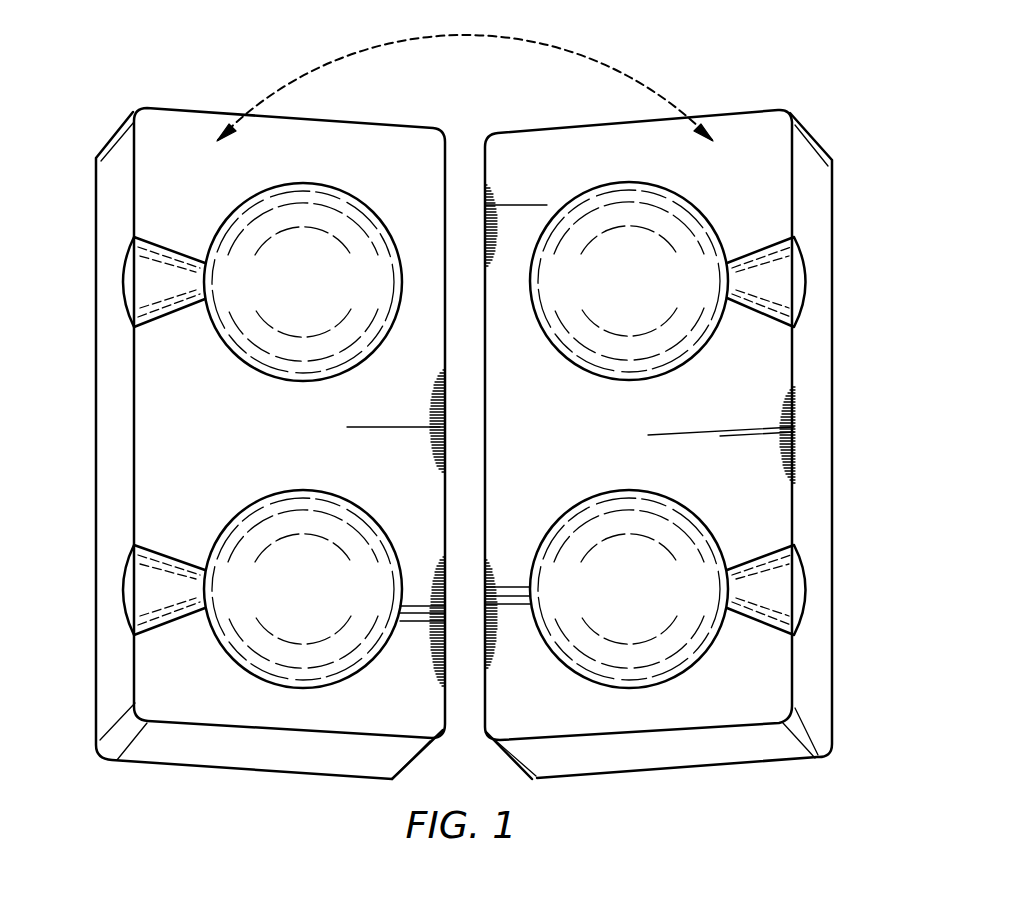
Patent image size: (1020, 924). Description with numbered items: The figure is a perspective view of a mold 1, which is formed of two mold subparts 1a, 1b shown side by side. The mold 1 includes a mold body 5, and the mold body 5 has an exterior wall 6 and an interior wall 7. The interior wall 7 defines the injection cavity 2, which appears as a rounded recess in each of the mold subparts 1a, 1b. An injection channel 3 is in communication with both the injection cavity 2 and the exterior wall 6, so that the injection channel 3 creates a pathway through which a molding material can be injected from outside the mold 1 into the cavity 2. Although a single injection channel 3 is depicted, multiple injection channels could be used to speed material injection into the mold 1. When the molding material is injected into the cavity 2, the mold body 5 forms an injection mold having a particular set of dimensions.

The mold 1 is at (793, 67).
The mold subpart 1a is at (238, 422).
The mold subpart 1b is at (698, 444).
The injection cavity 2 is at (277, 620).
The injection channel 3 is at (141, 583).
The mold body 5 is at (853, 583).
The exterior wall 6 is at (96, 194).
The interior wall 7 is at (153, 128).